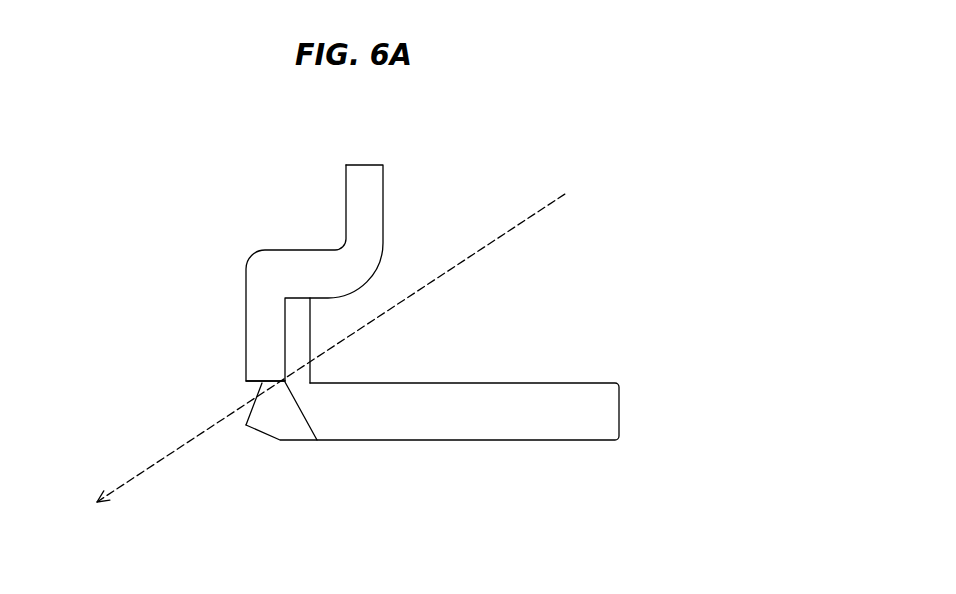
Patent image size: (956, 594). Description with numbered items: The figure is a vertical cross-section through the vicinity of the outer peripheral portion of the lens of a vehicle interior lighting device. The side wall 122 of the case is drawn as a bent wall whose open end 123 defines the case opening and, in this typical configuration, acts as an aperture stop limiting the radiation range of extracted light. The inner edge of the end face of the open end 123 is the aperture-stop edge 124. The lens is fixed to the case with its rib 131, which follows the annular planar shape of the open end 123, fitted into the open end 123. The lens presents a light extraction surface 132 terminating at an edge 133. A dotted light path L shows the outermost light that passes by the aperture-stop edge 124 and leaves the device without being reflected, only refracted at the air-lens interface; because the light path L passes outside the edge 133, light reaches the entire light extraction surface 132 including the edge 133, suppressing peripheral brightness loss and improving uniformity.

The side wall 122 is at (302, 263).
The rib 131 is at (298, 323).
The open end 123 is at (265, 372).
The edge 133 is at (246, 425).
The aperture-stop edge 124 is at (317, 440).
The light extraction surface 132 is at (562, 442).
The light path L is at (462, 267).